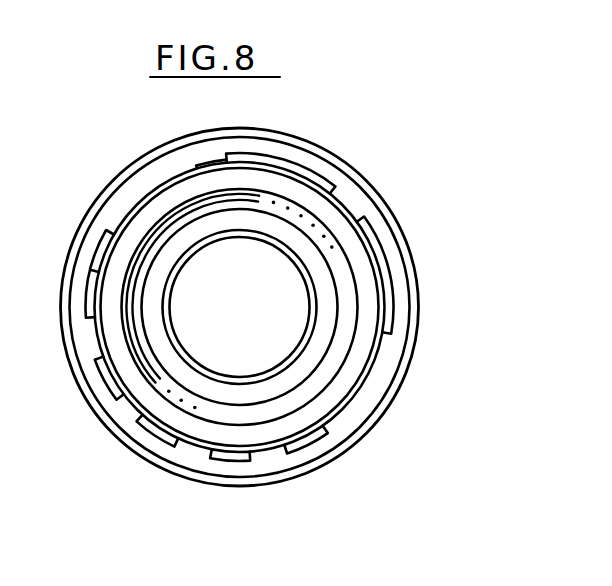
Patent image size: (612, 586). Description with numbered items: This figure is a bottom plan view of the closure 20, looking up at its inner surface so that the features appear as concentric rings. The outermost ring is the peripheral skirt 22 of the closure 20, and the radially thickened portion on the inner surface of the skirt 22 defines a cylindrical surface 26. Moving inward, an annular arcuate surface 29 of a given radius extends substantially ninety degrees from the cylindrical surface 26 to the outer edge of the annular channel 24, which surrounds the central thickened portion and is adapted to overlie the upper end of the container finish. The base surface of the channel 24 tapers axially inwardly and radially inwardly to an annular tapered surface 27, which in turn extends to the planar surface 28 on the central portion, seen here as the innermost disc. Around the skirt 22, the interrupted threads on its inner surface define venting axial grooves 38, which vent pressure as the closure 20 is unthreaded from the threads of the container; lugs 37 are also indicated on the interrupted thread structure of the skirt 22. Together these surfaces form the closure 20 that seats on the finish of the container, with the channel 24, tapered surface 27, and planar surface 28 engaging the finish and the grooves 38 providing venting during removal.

The closure 20 is at (422, 312).
The peripheral skirt 22 is at (330, 443).
The annular channel 24 is at (232, 397).
The cylindrical surface 26 is at (346, 352).
The annular tapered surface 27 is at (296, 366).
The planar surface 28 is at (270, 325).
The annular arcuate surface 29 is at (268, 413).
The lug 37 is at (383, 267).
The venting axial grooves 38 is at (116, 402).